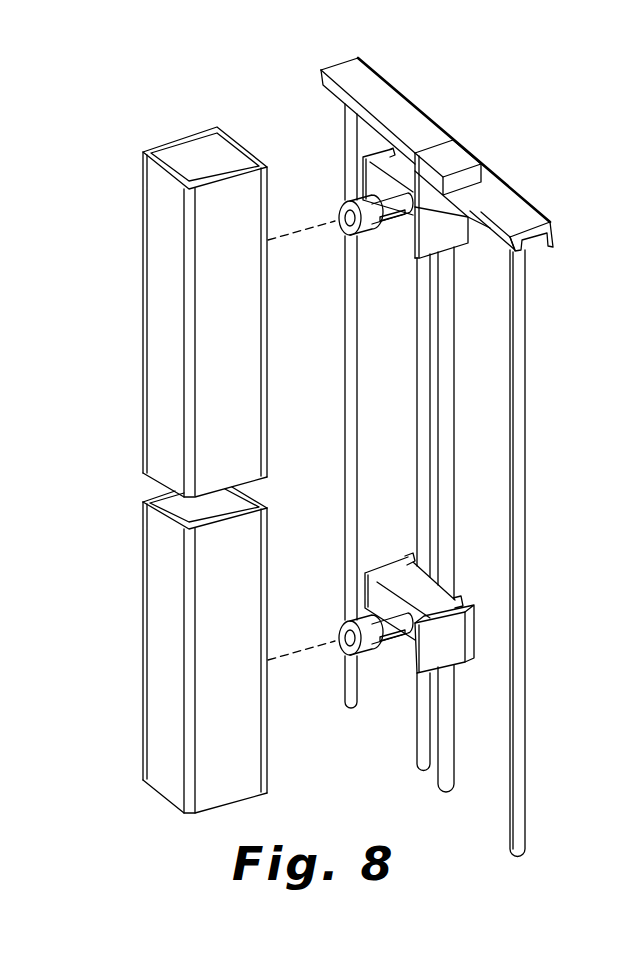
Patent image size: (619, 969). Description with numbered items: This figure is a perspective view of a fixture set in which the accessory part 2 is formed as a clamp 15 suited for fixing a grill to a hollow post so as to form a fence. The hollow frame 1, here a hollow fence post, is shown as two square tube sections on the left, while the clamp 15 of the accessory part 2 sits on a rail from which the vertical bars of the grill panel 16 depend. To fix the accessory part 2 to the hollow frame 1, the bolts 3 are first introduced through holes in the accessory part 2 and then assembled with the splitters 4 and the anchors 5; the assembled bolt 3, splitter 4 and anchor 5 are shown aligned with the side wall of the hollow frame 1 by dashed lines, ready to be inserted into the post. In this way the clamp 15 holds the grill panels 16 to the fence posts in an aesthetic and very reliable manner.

The hollow frame 1 is at (162, 305).
The accessory part 2 is at (468, 223).
The bolt 3 is at (342, 227).
The splitter 4 is at (412, 220).
The anchor 5 is at (362, 236).
The clamp 15 is at (450, 232).
The grill panel 16 is at (525, 378).